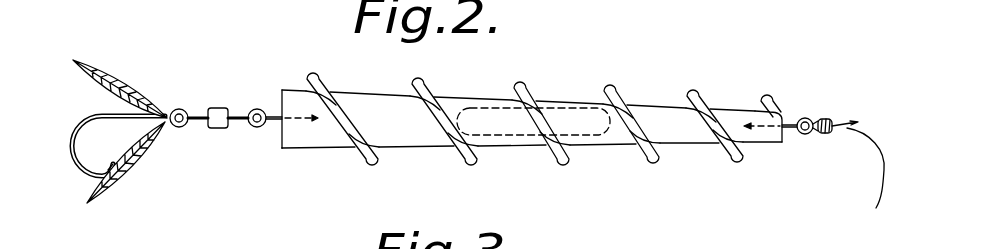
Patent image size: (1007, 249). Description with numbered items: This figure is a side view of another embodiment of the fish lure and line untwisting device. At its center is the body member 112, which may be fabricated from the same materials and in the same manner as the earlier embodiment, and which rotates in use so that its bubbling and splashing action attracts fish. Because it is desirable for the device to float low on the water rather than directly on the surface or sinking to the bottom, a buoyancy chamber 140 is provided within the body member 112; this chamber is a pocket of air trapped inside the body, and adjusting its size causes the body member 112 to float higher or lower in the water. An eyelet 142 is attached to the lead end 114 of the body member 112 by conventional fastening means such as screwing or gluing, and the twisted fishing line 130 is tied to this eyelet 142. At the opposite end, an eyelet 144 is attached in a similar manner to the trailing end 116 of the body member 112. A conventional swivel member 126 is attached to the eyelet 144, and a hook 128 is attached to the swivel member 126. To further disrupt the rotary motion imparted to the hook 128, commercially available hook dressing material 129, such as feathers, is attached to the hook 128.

The body member 112 is at (325, 140).
The lead end 114 is at (790, 96).
The trailing end 116 is at (281, 149).
The swivel member 126 is at (216, 107).
The hook 128 is at (72, 152).
The hook dressing material 129 is at (114, 80).
The twisted fishing line 130 is at (859, 175).
The buoyancy chamber 140 is at (515, 136).
The eyelet 142 is at (800, 134).
The eyelet 144 is at (257, 109).